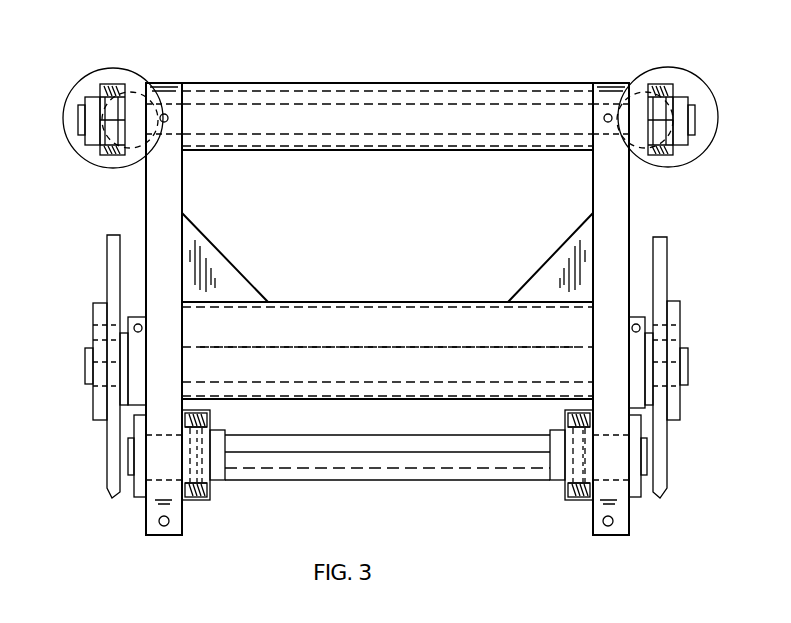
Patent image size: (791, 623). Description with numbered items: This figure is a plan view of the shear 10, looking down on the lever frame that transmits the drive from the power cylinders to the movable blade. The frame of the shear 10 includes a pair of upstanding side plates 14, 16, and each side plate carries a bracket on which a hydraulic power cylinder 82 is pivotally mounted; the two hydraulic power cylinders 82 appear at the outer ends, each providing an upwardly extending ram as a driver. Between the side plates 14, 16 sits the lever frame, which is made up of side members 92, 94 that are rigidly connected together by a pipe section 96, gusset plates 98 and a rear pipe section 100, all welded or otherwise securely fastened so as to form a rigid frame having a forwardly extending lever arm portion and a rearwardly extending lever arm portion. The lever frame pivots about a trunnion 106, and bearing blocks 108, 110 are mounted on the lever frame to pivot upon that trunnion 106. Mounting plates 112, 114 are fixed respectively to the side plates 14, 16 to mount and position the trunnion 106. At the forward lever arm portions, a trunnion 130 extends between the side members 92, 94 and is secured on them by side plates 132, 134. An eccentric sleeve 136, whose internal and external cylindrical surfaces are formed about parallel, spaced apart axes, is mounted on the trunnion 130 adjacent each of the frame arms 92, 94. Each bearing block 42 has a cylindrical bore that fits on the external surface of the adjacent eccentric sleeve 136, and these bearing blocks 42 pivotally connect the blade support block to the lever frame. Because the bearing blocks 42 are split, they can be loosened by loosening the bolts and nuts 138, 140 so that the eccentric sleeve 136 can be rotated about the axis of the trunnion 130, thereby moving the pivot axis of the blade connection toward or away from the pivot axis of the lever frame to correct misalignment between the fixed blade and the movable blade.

The shear 10 is at (622, 62).
The side plate 14 is at (660, 272).
The side plate 16 is at (112, 265).
The bearing block 42 is at (212, 495).
The hydraulic power cylinder 82 is at (85, 85).
The side member 92 is at (607, 235).
The side member 94 is at (168, 192).
The pipe section 96 is at (308, 302).
The gusset plate 98 is at (232, 278).
The rear pipe section 100 is at (392, 84).
The trunnion 106 is at (282, 347).
The bearing block 108 is at (636, 370).
The bearing block 110 is at (135, 367).
The mounting plate 112 is at (673, 320).
The mounting plate 114 is at (100, 322).
The trunnion 130 is at (428, 462).
The side plate 132 is at (634, 490).
The side plate 134 is at (140, 497).
The eccentric sleeve 136 is at (215, 432).
The bolt 138 is at (197, 500).
The nut 140 is at (195, 412).